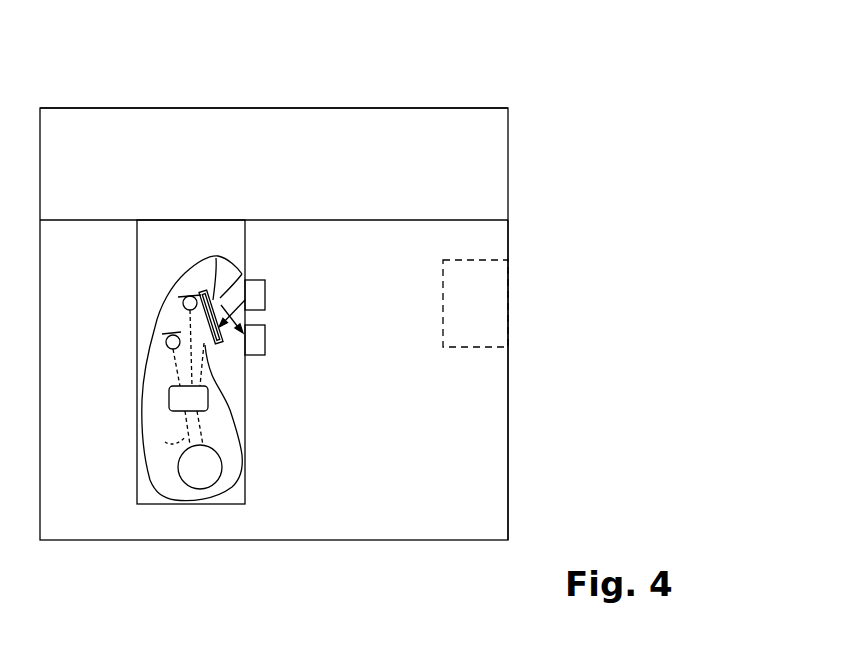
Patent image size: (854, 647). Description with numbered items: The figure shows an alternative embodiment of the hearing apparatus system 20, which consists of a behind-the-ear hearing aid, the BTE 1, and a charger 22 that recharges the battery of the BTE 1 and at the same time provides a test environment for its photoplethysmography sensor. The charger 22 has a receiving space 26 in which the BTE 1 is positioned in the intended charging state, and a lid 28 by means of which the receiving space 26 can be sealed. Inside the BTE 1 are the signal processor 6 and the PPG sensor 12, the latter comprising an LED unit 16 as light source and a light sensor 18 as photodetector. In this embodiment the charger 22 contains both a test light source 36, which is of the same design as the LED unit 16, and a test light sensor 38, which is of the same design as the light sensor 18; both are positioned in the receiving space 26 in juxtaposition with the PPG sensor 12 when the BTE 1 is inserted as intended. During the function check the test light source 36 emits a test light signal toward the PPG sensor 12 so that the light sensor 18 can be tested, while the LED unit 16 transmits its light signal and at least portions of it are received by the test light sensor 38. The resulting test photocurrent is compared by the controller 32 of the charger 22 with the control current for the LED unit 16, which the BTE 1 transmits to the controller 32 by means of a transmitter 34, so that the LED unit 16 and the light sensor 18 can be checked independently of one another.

The BTE 1 is at (160, 274).
The signal processor 6 is at (168, 389).
The PPG sensor 12 is at (212, 322).
The LED unit 16 is at (226, 292).
The light sensor 18 is at (222, 340).
The hearing apparatus system 20 is at (476, 90).
The charger 22 is at (509, 466).
The receiving space 26 is at (248, 478).
The lid 28 is at (289, 108).
The controller 32 is at (497, 282).
The transmitter 34 is at (168, 437).
The test light source 36 is at (266, 292).
The test light sensor 38 is at (266, 340).